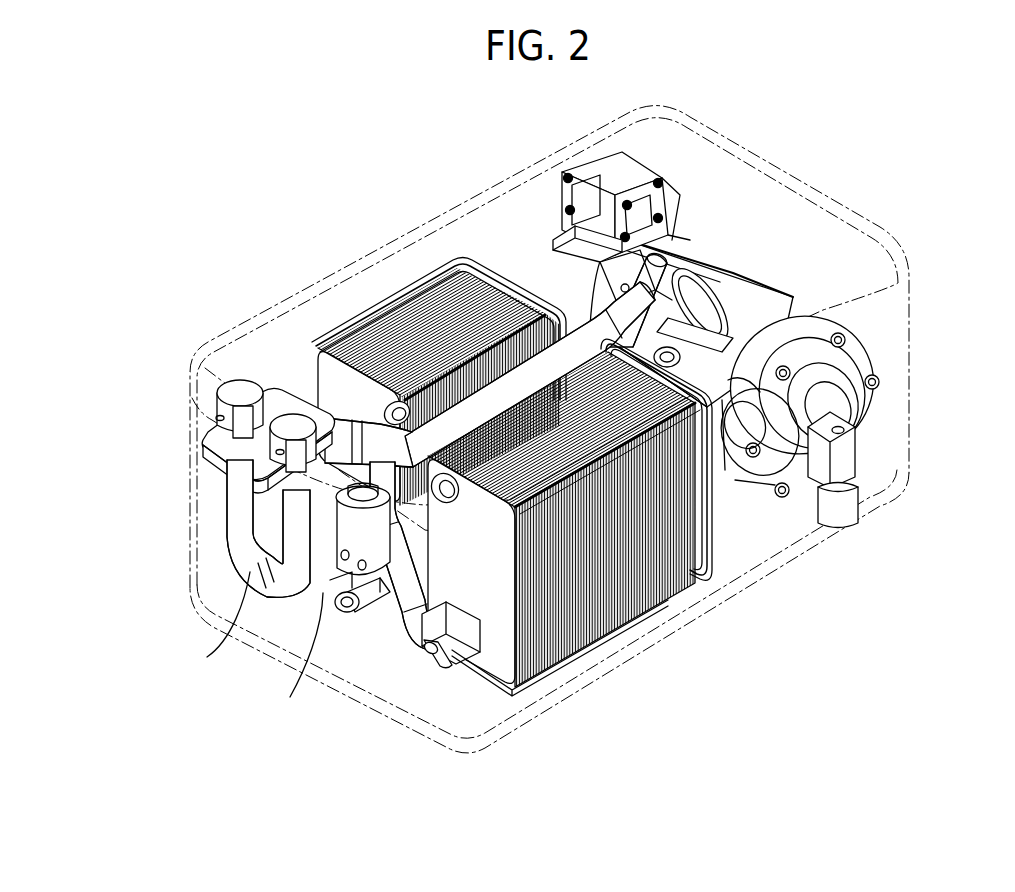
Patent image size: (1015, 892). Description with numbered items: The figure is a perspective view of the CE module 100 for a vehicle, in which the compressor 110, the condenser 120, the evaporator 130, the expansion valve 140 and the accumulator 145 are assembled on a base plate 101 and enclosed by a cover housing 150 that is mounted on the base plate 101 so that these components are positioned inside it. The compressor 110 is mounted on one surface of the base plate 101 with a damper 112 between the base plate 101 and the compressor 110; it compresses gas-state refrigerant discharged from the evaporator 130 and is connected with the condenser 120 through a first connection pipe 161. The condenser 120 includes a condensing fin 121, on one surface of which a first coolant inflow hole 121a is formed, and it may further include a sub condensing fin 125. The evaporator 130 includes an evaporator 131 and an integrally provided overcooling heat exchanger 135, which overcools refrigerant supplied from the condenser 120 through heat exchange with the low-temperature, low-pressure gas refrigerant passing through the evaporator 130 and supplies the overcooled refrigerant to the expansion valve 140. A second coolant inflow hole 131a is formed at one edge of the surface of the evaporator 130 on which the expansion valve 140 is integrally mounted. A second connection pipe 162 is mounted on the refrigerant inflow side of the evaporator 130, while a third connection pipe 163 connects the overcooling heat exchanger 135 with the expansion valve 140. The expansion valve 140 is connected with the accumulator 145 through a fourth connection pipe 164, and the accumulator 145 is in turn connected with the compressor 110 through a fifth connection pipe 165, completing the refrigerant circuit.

The CE module 100 is at (402, 97).
The base plate 101 is at (436, 722).
The compressor 110 is at (770, 358).
The damper 112 is at (852, 503).
The condenser 120 is at (612, 545).
The condensing fin 121 is at (571, 538).
The first coolant inflow hole 121a is at (444, 503).
The sub condensing fin 125 is at (567, 674).
The evaporator 130 is at (347, 190).
The evaporator 131 is at (352, 354).
The second coolant inflow hole 131a is at (384, 413).
The overcooling heat exchanger 135 is at (327, 333).
The expansion valve 140 is at (333, 583).
The accumulator 145 is at (235, 515).
The cover housing 150 is at (778, 160).
The first connection pipe 161 is at (818, 310).
The second connection pipe 162 is at (397, 632).
The third connection pipe 163 is at (250, 572).
The fourth connection pipe 164 is at (265, 390).
The fifth connection pipe 165 is at (545, 355).